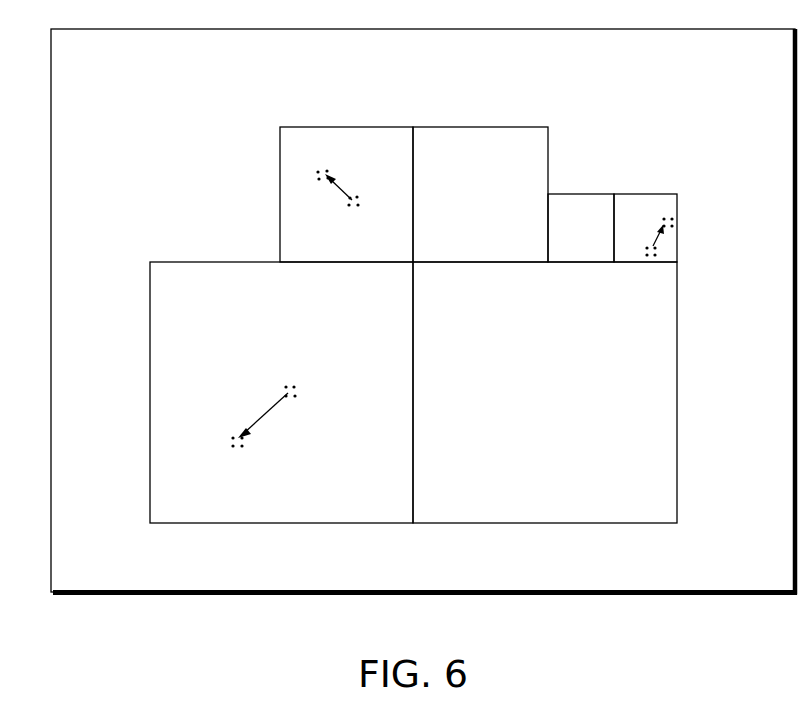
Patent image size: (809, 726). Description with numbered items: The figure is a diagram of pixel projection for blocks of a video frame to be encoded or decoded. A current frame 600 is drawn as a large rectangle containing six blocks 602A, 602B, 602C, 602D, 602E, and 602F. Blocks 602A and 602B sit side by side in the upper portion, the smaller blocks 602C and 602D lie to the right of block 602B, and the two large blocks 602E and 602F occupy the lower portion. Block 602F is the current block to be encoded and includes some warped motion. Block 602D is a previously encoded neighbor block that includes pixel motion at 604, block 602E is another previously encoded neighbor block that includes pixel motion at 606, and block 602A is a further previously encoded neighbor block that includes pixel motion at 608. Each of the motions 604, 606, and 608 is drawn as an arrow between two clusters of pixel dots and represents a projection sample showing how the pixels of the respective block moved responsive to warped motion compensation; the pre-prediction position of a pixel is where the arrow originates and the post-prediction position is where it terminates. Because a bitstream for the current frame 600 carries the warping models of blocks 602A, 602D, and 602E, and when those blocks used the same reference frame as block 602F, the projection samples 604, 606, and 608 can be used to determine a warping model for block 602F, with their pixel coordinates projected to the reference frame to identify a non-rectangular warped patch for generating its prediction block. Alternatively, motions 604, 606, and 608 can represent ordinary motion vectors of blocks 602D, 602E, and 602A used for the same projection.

The current frame 600 is at (166, 600).
The block 602A is at (336, 154).
The block 602B is at (469, 152).
The block 602C is at (598, 216).
The block 602D is at (664, 216).
The block 602E is at (208, 289).
The block 602F is at (470, 289).
The pixel motion 604 is at (660, 243).
The pixel motion 606 is at (272, 404).
The pixel motion 608 is at (338, 194).